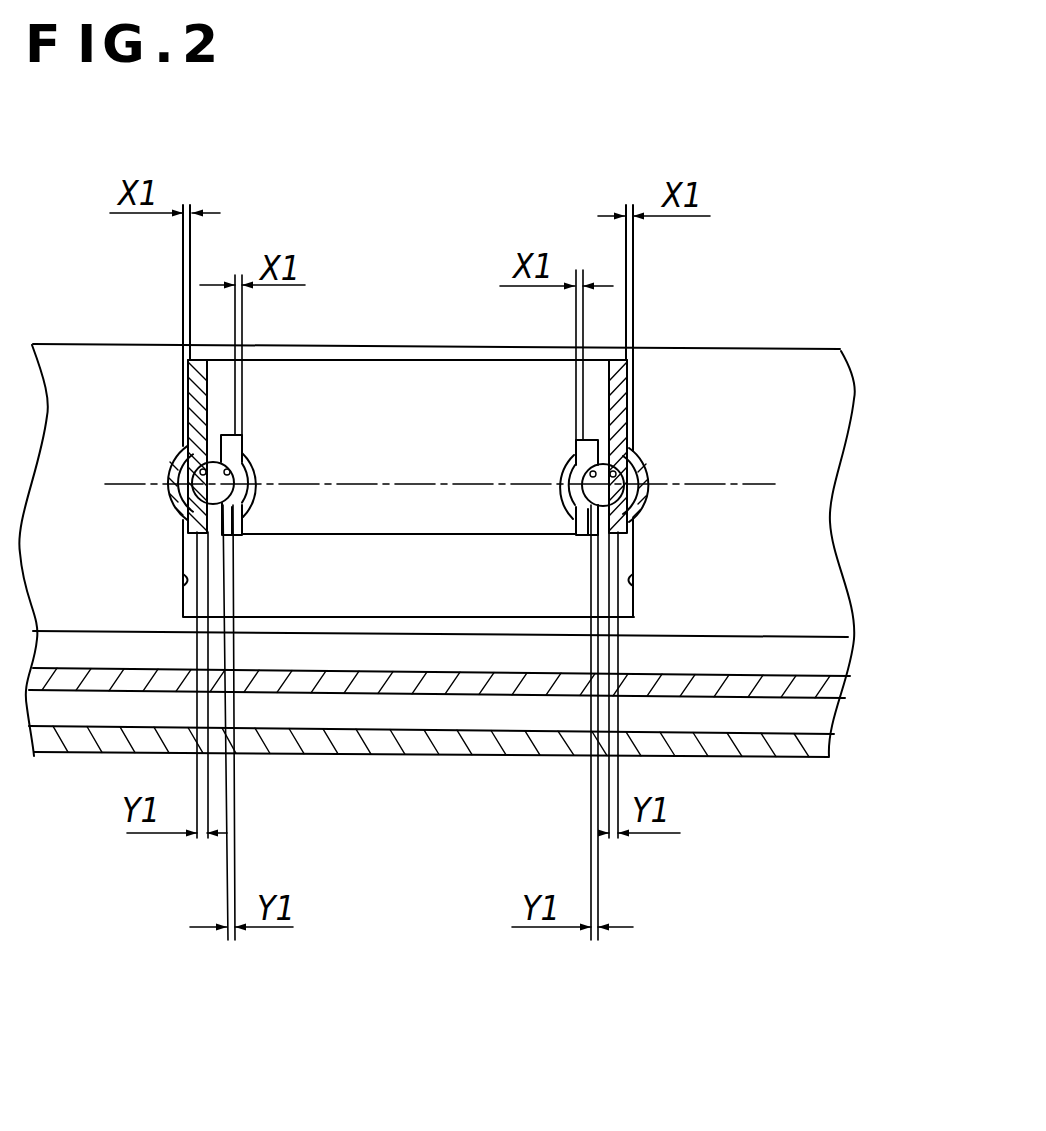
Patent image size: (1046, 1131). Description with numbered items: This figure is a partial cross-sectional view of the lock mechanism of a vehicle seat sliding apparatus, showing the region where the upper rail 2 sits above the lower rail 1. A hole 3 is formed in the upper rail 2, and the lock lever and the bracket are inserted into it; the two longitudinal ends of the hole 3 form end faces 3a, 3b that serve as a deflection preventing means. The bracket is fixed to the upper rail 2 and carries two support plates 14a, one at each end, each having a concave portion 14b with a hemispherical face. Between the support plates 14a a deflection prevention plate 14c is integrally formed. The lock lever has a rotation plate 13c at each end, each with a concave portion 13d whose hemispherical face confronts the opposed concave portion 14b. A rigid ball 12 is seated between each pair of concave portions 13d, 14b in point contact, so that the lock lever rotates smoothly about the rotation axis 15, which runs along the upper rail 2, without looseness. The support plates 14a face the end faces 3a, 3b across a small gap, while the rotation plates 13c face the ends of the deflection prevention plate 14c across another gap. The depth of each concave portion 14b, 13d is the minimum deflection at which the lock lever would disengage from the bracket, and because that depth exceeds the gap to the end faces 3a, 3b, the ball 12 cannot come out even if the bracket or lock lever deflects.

The lower rail 1 is at (803, 758).
The upper rail 2 is at (817, 397).
The hole 3 is at (360, 358).
The end face 3a is at (183, 588).
The end face 3b is at (633, 588).
The ball 12 is at (186, 506).
The rotation plate 13c is at (248, 496).
The concave portion 13d is at (243, 458).
The support plate 14a is at (188, 393).
The concave portion 14b is at (186, 455).
The deflection prevention plate 14c is at (411, 520).
The rotation axis 15 is at (456, 485).